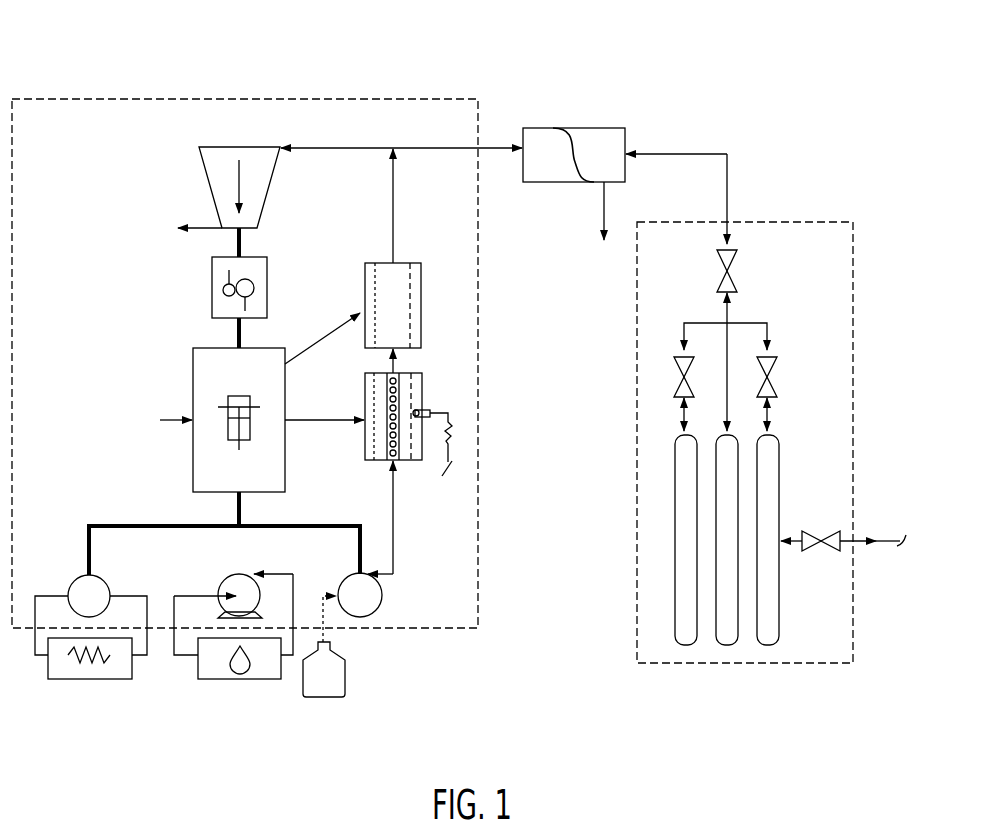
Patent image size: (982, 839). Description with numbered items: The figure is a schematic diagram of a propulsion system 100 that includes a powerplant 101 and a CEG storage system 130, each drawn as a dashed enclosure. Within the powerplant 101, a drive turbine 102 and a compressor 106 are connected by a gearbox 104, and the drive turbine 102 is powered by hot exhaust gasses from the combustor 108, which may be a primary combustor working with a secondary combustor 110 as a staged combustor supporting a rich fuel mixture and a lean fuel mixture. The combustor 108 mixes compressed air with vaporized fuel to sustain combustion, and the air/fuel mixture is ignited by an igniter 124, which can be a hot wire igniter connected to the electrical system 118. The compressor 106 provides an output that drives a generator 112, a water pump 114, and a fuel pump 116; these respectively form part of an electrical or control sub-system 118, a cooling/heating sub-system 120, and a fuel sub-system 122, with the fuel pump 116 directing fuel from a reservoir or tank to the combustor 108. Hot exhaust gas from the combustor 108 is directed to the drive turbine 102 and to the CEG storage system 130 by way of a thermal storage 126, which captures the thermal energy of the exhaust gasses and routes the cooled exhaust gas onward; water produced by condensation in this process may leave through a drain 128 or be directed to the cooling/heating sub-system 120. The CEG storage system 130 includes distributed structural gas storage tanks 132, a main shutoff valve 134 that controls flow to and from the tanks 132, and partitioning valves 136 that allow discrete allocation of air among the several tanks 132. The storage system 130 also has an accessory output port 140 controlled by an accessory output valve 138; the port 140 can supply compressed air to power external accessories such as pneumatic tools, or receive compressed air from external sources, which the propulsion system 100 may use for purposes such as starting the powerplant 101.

The propulsion system 100 is at (757, 80).
The powerplant 101 is at (203, 99).
The drive turbine 102 is at (200, 166).
The gearbox 104 is at (212, 290).
The compressor 106 is at (193, 375).
The combustor 108 is at (405, 373).
The secondary combustor 110 is at (405, 263).
The generator 112 is at (77, 578).
The water pump 114 is at (222, 585).
The fuel pump 116 is at (382, 598).
The electrical or control sub-system 118 is at (88, 679).
The cooling/heating sub-system 120 is at (240, 679).
The fuel sub-system 122 is at (346, 672).
The igniter 124 is at (452, 432).
The thermal storage 126 is at (603, 128).
The drain 128 is at (608, 270).
The CEG storage system 130 is at (800, 222).
The distributed structural gas storage tanks 132 is at (768, 645).
The main shutoff valve 134 is at (733, 265).
The partitioning valves 136 is at (692, 386).
The accessory output valve 138 is at (808, 531).
The accessory output port 140 is at (887, 545).